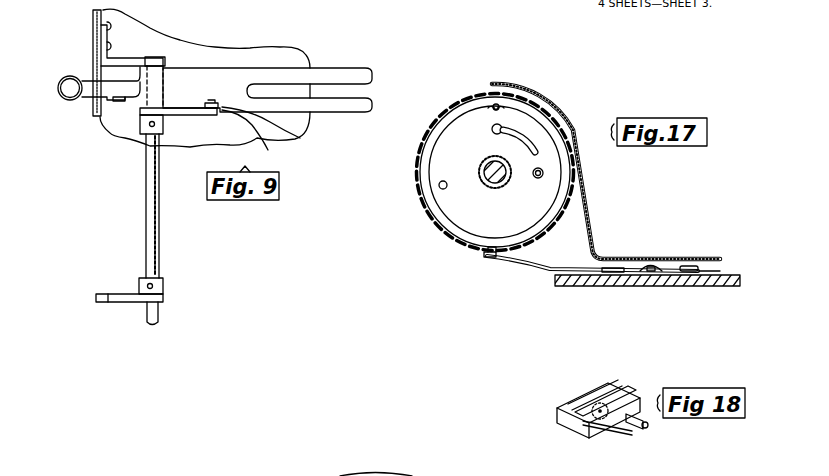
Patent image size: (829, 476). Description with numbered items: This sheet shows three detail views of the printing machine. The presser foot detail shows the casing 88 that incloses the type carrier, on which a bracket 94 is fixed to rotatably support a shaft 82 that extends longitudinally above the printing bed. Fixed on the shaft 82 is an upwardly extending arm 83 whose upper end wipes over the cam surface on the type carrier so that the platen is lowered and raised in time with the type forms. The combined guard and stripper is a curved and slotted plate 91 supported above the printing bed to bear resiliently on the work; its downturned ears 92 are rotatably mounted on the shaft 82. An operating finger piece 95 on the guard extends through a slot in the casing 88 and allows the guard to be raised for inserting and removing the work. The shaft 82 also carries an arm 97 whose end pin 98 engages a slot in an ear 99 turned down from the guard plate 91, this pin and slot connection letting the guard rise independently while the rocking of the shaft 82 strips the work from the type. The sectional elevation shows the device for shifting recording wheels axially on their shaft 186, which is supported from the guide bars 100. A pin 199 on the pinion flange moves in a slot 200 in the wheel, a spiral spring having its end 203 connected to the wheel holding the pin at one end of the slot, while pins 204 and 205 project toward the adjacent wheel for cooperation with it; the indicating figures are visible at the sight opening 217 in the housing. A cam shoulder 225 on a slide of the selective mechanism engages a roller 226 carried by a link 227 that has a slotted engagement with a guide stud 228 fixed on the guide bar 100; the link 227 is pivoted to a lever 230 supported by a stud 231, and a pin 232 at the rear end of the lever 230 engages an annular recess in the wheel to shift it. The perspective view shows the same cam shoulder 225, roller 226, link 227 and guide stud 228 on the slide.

In FIG. 9, the shaft 82 is at (160, 220).
In FIG. 9, the upwardly extending arm 83 is at (103, 294).
In FIG. 9, the casing 88 is at (100, 33).
In FIG. 9, the curved and slotted plate 91 is at (322, 75).
In FIG. 9, the downturned ears 92 is at (165, 62).
In FIG. 9, the bracket 94 is at (125, 57).
In FIG. 9, the operating finger piece 95 is at (70, 88).
In FIG. 9, the arm 97 is at (192, 115).
In FIG. 9, the pin 98 is at (268, 150).
In FIG. 9, the ear 99 is at (300, 138).
In FIG. 17, the guide bar 100 is at (645, 286).
In FIG. 17, the shaft 186 is at (498, 180).
In FIG. 17, the pin 199 is at (493, 126).
In FIG. 17, the slot 200 is at (517, 132).
In FIG. 17, the end of spiral spring 203 is at (495, 103).
In FIG. 17, the pin 204 is at (439, 186).
In FIG. 17, the pin 205 is at (538, 176).
In FIG. 17, the sight opening 217 is at (583, 143).
In FIG. 17, the cam shoulder 225 is at (708, 272).
In FIG. 18, the cam shoulder 225 is at (615, 402).
In FIG. 18, the roller 226 is at (598, 408).
In FIG. 17, the link 227 is at (700, 267).
In FIG. 18, the link 227 is at (646, 427).
In FIG. 17, the guide stud 228 is at (683, 266).
In FIG. 18, the guide stud 228 is at (626, 433).
In FIG. 17, the lever 230 is at (550, 267).
In FIG. 17, the stud 231 is at (607, 272).
In FIG. 17, the pin 232 is at (488, 260).